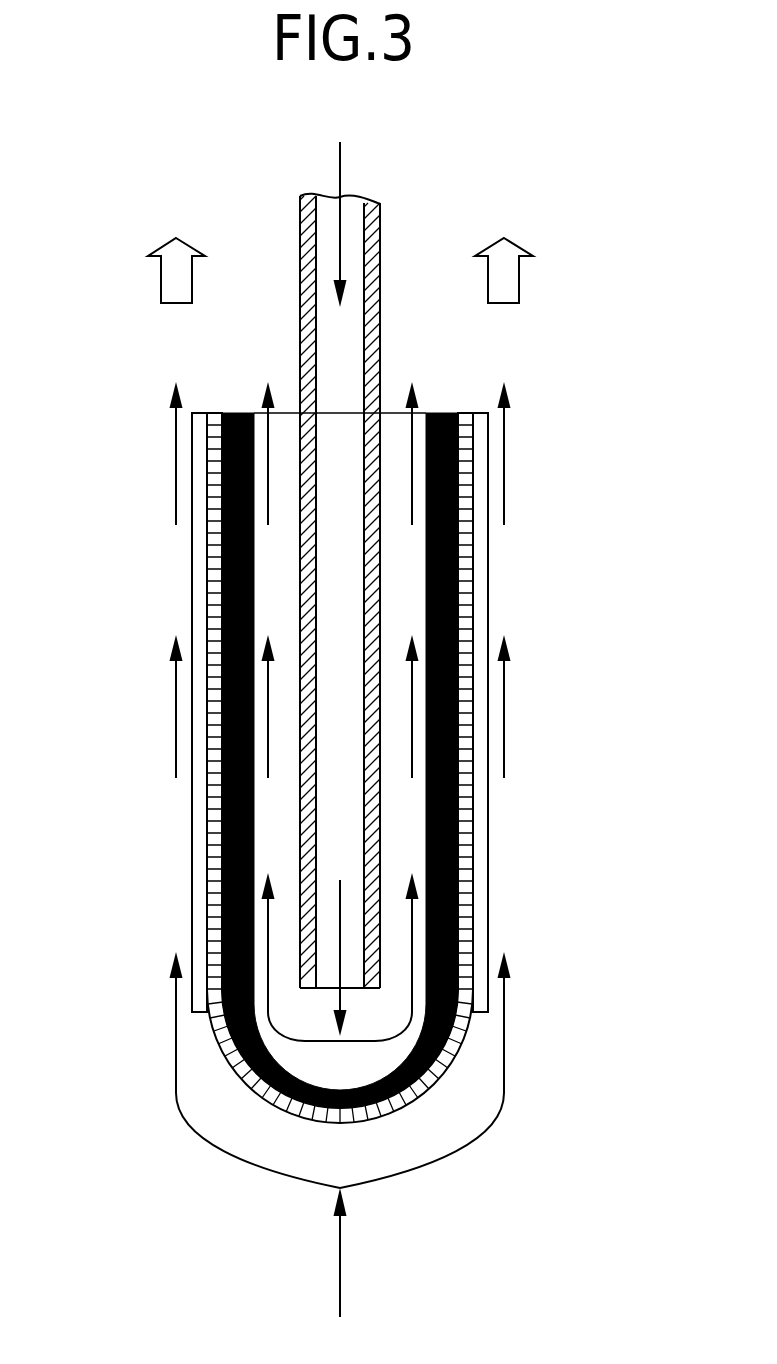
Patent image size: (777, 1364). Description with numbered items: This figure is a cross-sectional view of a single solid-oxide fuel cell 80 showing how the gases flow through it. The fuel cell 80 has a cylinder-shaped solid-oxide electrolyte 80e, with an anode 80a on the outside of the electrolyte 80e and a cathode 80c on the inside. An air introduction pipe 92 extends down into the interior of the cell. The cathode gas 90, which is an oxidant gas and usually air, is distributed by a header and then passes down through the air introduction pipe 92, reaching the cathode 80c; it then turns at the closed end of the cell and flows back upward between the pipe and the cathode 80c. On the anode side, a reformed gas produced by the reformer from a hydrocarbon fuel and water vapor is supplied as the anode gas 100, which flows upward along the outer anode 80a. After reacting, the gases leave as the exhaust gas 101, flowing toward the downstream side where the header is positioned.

The fuel cell 80 is at (394, 770).
The anode 80a is at (488, 582).
The cathode 80c is at (238, 413).
The solid-oxide electrolyte 80e is at (413, 1104).
The cathode gas 90 is at (340, 158).
The air introduction pipe 92 is at (380, 246).
The anode gas 100 is at (341, 1262).
The exhaust gas 101 is at (161, 276).